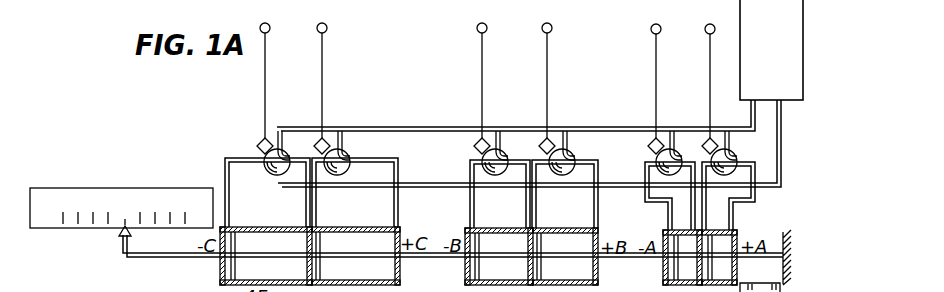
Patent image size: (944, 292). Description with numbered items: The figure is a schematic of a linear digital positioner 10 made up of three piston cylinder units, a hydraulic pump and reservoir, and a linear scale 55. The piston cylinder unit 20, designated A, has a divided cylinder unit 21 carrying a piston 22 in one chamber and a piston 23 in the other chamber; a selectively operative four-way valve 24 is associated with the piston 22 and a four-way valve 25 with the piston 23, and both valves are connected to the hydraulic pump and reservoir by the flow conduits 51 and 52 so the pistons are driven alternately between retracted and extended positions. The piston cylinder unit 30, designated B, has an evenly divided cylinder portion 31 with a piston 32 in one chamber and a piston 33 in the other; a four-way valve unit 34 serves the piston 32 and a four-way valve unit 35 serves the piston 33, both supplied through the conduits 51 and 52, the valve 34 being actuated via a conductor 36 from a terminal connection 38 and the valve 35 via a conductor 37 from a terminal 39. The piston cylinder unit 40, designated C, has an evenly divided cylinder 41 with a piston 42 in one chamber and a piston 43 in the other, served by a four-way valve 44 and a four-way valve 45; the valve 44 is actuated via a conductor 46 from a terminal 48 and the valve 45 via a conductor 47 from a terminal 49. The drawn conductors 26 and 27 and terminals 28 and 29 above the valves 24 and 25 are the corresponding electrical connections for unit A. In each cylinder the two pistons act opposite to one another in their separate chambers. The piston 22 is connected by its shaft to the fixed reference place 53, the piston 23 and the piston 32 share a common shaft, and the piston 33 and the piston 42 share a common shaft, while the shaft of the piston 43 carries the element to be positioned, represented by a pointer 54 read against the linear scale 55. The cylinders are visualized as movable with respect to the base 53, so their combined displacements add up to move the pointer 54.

The linear digital positioner 10 is at (413, 67).
The piston cylinder unit 20 is at (637, 234).
The divided cylinder unit 21 is at (722, 216).
The piston 22 is at (710, 262).
The piston 23 is at (680, 266).
The four-way valve 24 is at (730, 158).
The four-way valve 25 is at (672, 158).
The control signal line 26 is at (710, 97).
The control signal line 27 is at (656, 97).
The signal input terminal 28 is at (724, 15).
The signal input terminal 29 is at (670, 15).
The piston cylinder unit 30 is at (464, 229).
The evenly divided cylinder portion 31 is at (573, 224).
The piston 32 is at (543, 247).
The piston 33 is at (481, 257).
The four-way valve unit 34 is at (568, 156).
The four-way valve unit 35 is at (498, 156).
The conductor 36 is at (547, 95).
The conductor 37 is at (482, 95).
The terminal connection 38 is at (550, 24).
The terminal 39 is at (497, 14).
The piston cylinder unit 40 is at (289, 221).
The evenly divided cylinder 41 is at (352, 222).
The piston 42 is at (326, 248).
The piston 43 is at (236, 265).
The four-way valve 44 is at (346, 156).
The four-way valve 45 is at (283, 158).
The conductor 46 is at (322, 95).
The conductor 47 is at (265, 95).
The terminal 48 is at (325, 24).
The terminal 49 is at (280, 14).
The flow conduit 51 is at (778, 188).
The flow conduit 52 is at (627, 128).
The fixed reference place 53 is at (784, 233).
The pointer 54 is at (121, 242).
The linear scale 55 is at (120, 188).